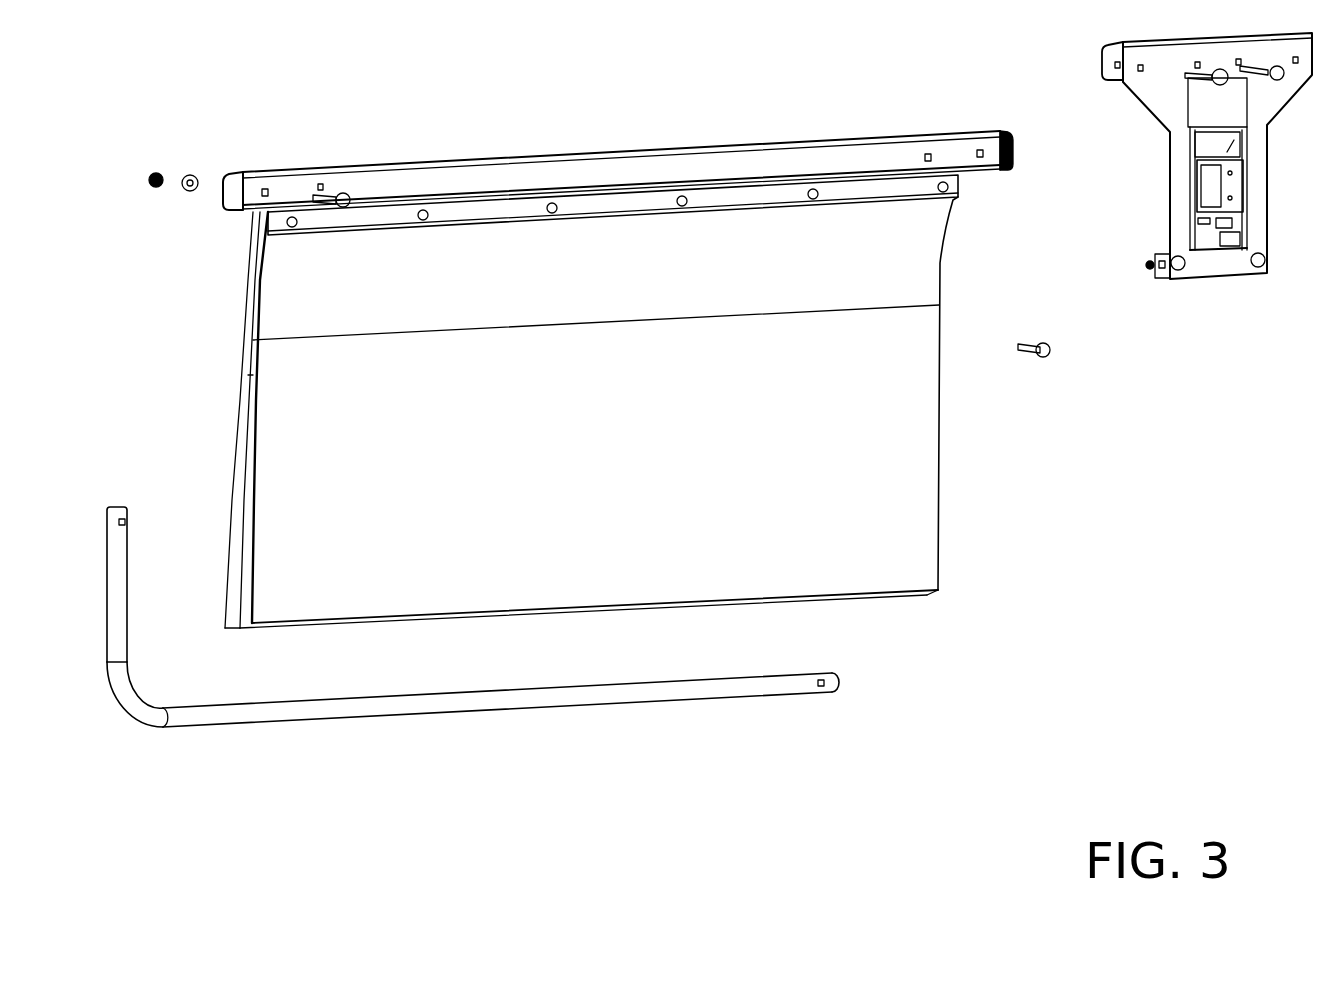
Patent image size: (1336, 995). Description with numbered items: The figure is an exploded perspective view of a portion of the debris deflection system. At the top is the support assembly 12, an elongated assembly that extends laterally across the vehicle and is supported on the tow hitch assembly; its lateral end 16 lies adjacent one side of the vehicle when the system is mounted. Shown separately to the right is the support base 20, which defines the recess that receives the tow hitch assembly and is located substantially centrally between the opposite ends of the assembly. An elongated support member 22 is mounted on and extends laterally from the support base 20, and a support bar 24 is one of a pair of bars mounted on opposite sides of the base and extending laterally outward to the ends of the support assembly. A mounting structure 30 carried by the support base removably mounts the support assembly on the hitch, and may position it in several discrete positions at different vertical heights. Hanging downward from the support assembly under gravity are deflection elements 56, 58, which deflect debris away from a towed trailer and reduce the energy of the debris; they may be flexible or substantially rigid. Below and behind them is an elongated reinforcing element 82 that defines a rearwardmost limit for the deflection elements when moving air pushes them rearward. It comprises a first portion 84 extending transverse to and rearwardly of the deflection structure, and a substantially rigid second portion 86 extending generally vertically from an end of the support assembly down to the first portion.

The support assembly 12 is at (815, 92).
The end of support assembly 16 is at (240, 174).
The support base 20 is at (1262, 100).
The elongated support member 22 is at (578, 132).
The support bar 24 is at (458, 158).
The mounting structure 30 is at (1207, 237).
The deflection element 56 is at (232, 430).
The deflection element 58 is at (940, 420).
The elongated reinforcing element 82 is at (657, 707).
The first portion of reinforcing element 84 is at (105, 650).
The second portion of reinforcing element 86 is at (283, 720).